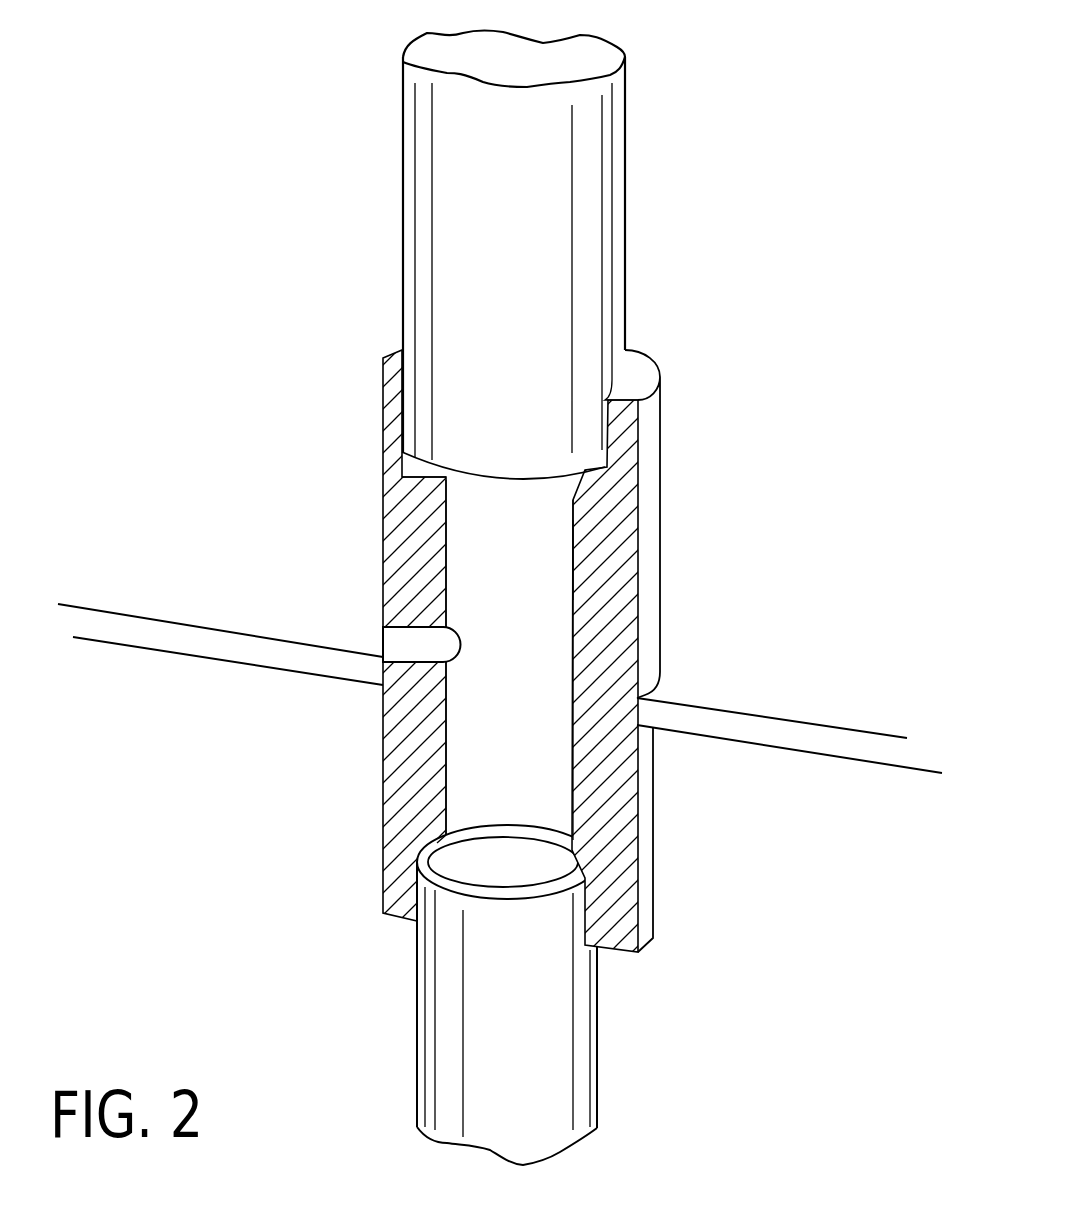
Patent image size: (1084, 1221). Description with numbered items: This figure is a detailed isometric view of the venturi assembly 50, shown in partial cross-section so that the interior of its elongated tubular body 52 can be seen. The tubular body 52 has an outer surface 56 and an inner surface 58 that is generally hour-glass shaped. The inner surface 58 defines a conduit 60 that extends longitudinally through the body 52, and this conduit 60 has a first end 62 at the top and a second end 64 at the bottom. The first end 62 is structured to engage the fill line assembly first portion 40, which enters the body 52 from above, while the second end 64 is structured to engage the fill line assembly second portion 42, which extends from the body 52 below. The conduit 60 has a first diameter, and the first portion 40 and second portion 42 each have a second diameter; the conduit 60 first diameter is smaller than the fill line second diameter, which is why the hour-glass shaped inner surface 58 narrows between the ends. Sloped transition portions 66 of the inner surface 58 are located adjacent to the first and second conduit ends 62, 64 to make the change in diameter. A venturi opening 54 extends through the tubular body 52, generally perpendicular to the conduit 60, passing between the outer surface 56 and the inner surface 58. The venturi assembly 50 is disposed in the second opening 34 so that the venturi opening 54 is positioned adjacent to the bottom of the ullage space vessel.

The venturi assembly 50 is at (300, 248).
The fill line assembly first portion 40 is at (597, 280).
The fill line assembly second portion 42 is at (428, 1040).
The second opening 34 is at (640, 692).
The venturi opening 54 is at (393, 632).
The tubular body 52 is at (390, 523).
The outer surface 56 is at (647, 441).
The inner surface 58 is at (452, 573).
The conduit 60 is at (518, 668).
The first end 62 is at (468, 495).
The second end 64 is at (490, 811).
The sloped transition portions 66 is at (578, 500).